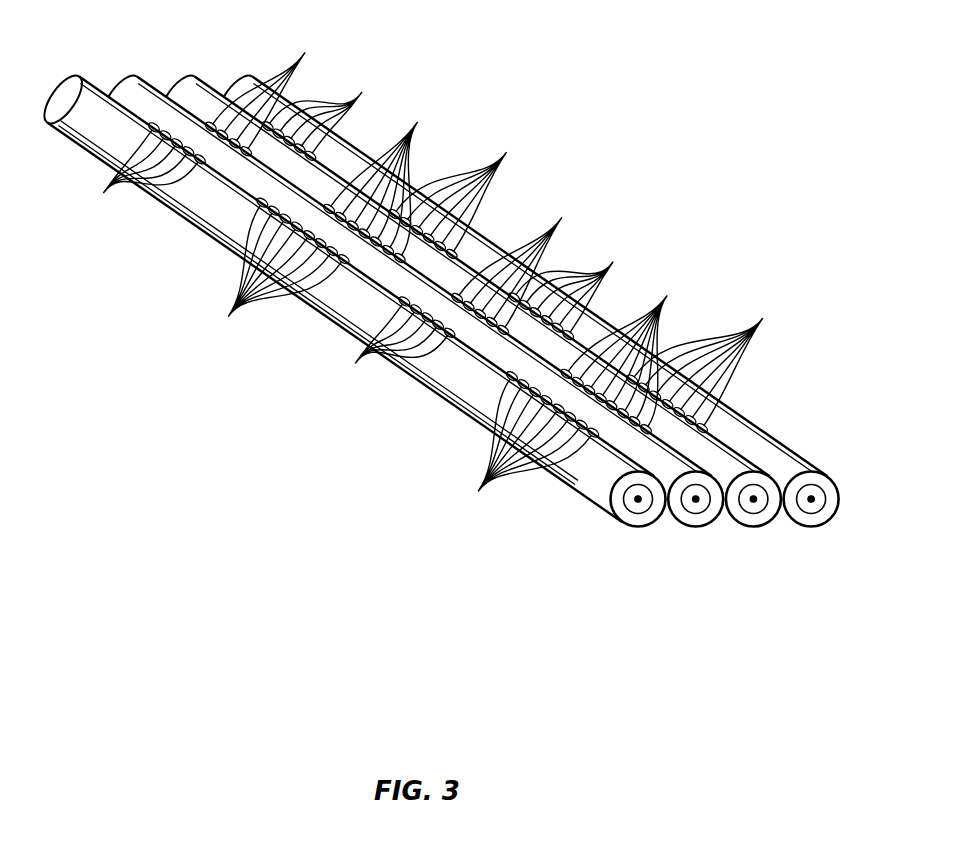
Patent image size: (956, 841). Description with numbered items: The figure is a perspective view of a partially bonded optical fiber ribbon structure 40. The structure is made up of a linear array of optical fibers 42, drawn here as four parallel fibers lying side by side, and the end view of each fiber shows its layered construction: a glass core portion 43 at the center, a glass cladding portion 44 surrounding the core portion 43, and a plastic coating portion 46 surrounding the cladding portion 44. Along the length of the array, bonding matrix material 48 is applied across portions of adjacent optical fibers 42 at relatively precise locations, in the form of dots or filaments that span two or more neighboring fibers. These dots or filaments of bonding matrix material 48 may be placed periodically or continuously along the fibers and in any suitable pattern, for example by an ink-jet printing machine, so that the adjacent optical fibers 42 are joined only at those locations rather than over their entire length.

The partially bonded optical fiber ribbon structure 40 is at (630, 123).
The optical fiber 42 is at (70, 66).
The core portion 43 is at (813, 505).
The cladding portion 44 is at (823, 507).
The coating portion 46 is at (802, 531).
The bonding matrix material 48 is at (431, 275).